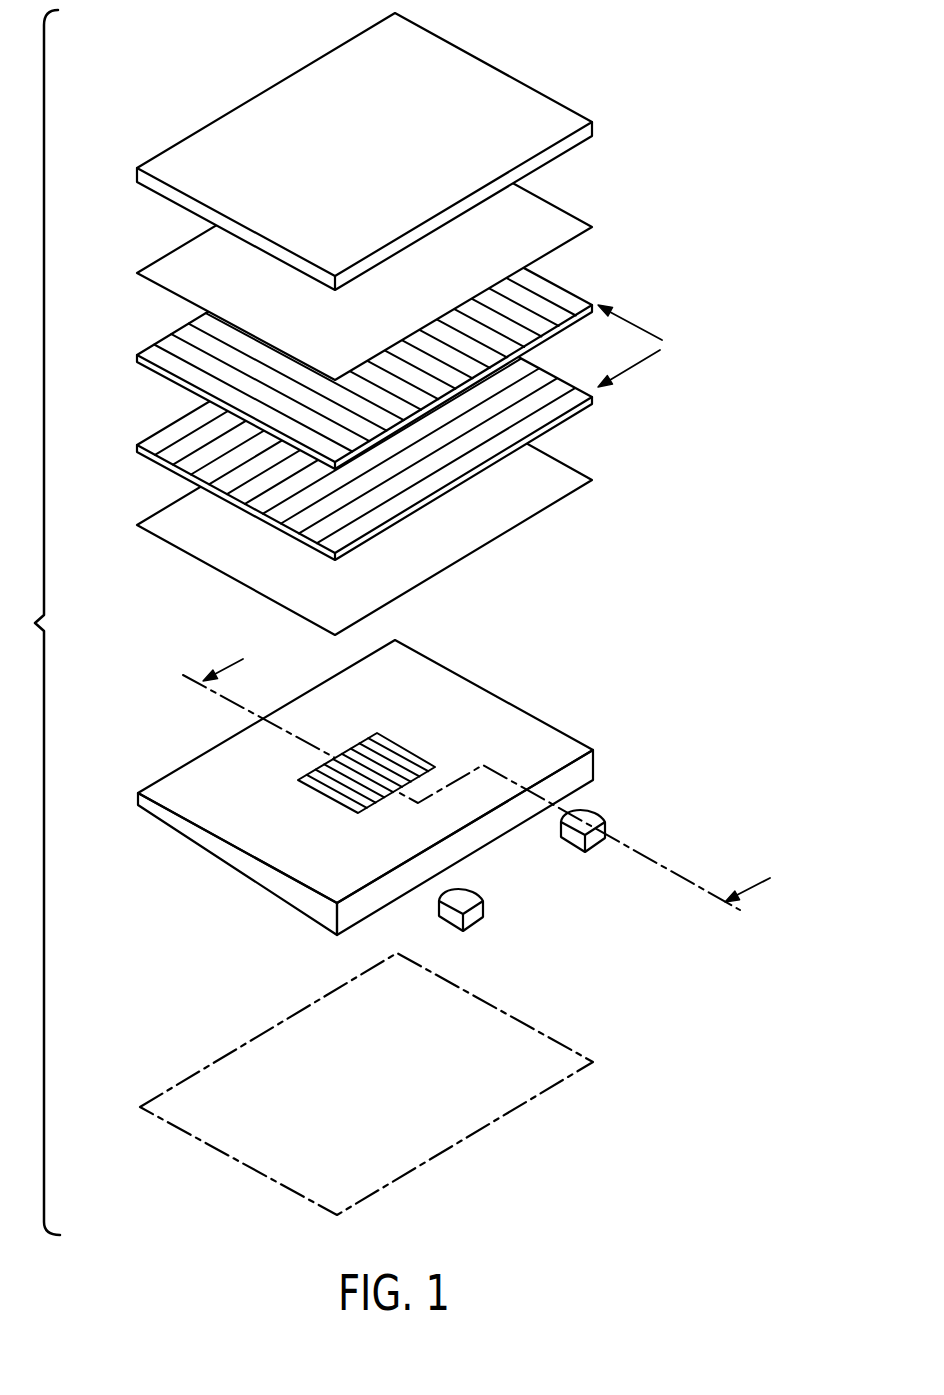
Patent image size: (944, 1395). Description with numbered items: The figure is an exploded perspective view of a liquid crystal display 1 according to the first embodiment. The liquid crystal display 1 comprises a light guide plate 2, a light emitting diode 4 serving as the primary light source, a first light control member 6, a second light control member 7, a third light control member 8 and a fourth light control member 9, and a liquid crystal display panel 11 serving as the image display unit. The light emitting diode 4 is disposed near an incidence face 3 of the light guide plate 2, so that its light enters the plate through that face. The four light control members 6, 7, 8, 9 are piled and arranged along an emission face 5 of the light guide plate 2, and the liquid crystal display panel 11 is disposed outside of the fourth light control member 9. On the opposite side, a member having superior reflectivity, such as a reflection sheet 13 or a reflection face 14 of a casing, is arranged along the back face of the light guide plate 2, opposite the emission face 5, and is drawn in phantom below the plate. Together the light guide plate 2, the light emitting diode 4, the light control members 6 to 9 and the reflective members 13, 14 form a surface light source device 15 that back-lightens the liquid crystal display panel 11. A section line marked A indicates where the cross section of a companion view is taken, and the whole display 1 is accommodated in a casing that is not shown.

The liquid crystal display 1 is at (616, 758).
The surface light source device 15 is at (47, 622).
The light guide plate 2 is at (209, 776).
The incidence face 3 is at (418, 876).
The light emitting diode 4 is at (592, 823).
The emission face 5 is at (440, 680).
The first light control member 6 is at (538, 500).
The second light control member 7 is at (550, 420).
The third light control member 8 is at (550, 292).
The fourth light control member 9 is at (552, 218).
The liquid crystal display panel 11 is at (542, 105).
The reflection sheet 13 is at (528, 1052).
The reflection face 14 is at (366, 1084).